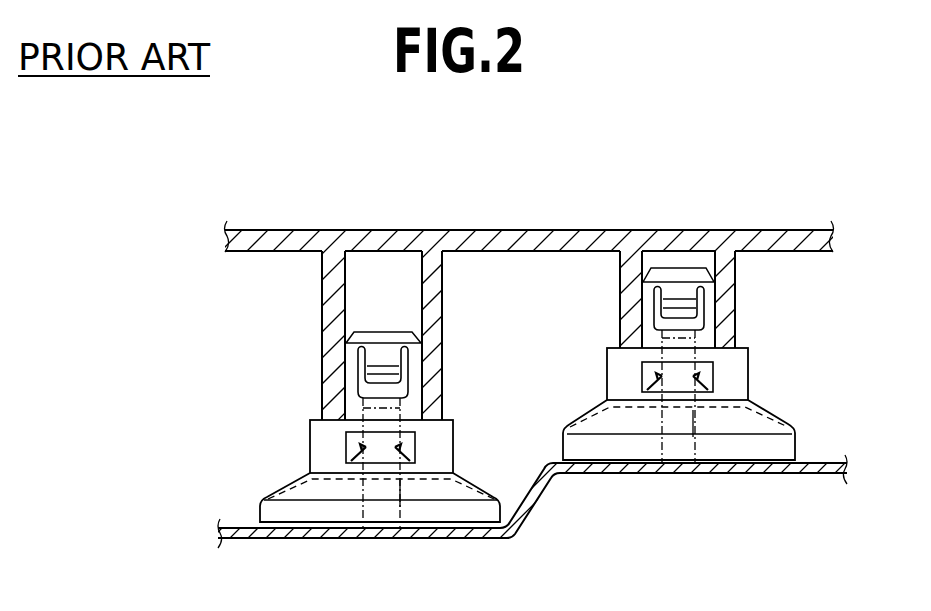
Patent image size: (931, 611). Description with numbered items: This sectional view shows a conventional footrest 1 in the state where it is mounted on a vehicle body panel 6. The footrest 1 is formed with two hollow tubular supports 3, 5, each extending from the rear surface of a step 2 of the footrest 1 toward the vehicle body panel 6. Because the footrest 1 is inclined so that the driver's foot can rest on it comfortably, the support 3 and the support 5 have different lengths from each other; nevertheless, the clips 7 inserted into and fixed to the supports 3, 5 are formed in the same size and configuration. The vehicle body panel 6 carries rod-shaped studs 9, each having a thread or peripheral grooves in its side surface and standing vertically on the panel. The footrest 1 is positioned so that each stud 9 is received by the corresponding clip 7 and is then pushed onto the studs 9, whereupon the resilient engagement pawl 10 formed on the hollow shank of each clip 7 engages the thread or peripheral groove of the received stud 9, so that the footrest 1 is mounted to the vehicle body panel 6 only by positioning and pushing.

The footrest 1 is at (472, 221).
The step 2 is at (530, 230).
The support 3 is at (441, 331).
The support 5 is at (628, 293).
The vehicle body panel 6 is at (263, 539).
The clip 7 is at (307, 436).
The stud 9 is at (400, 507).
The resilient engagement pawl 10 is at (346, 450).